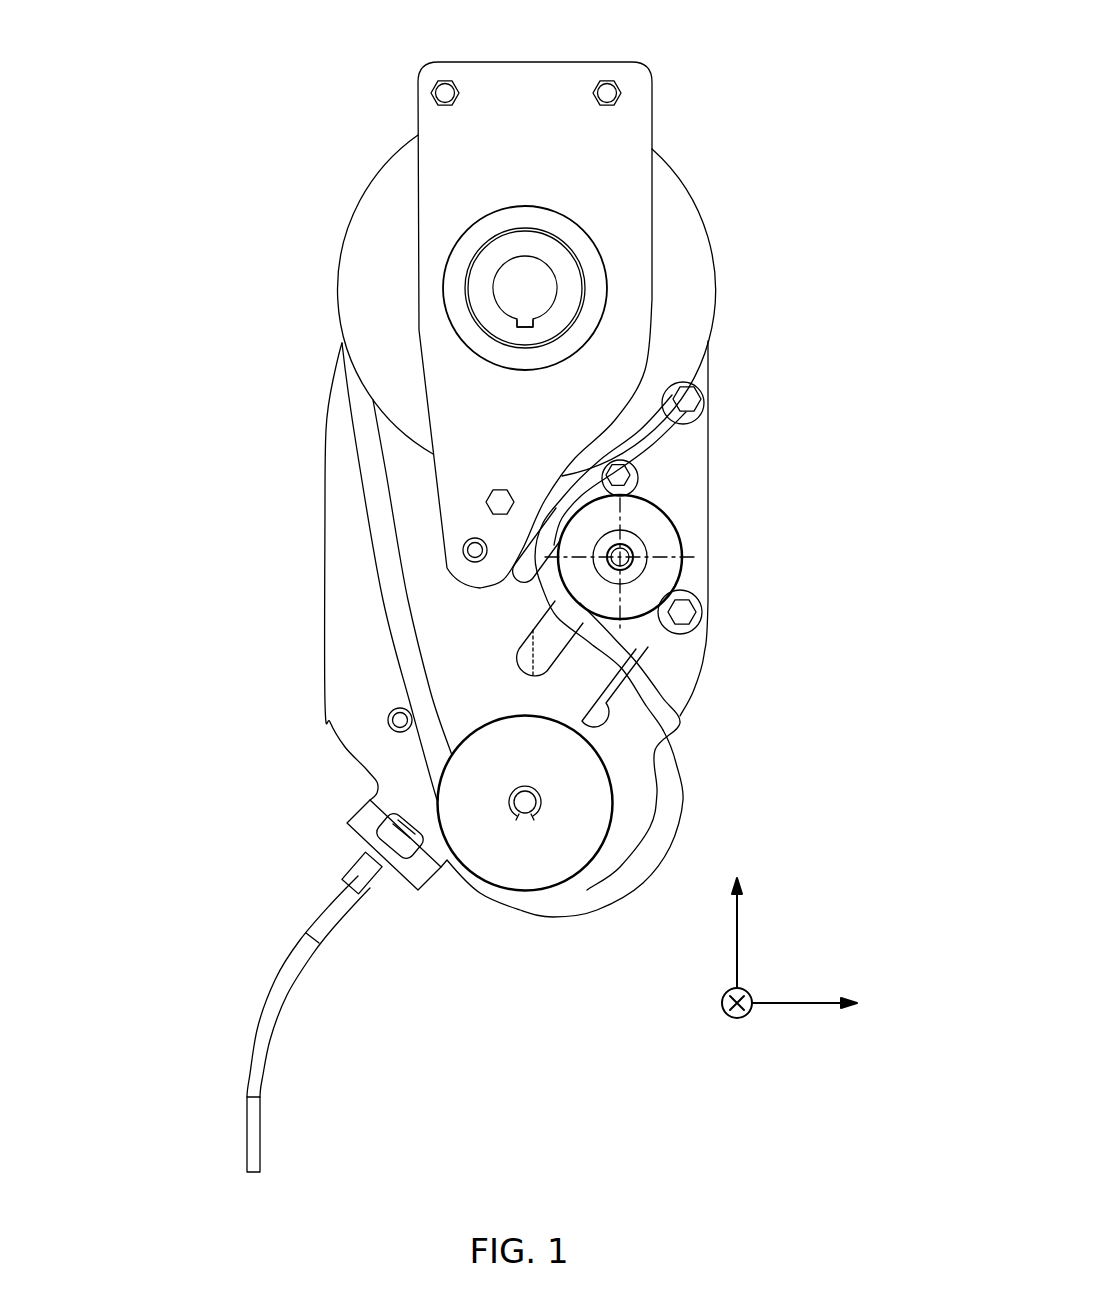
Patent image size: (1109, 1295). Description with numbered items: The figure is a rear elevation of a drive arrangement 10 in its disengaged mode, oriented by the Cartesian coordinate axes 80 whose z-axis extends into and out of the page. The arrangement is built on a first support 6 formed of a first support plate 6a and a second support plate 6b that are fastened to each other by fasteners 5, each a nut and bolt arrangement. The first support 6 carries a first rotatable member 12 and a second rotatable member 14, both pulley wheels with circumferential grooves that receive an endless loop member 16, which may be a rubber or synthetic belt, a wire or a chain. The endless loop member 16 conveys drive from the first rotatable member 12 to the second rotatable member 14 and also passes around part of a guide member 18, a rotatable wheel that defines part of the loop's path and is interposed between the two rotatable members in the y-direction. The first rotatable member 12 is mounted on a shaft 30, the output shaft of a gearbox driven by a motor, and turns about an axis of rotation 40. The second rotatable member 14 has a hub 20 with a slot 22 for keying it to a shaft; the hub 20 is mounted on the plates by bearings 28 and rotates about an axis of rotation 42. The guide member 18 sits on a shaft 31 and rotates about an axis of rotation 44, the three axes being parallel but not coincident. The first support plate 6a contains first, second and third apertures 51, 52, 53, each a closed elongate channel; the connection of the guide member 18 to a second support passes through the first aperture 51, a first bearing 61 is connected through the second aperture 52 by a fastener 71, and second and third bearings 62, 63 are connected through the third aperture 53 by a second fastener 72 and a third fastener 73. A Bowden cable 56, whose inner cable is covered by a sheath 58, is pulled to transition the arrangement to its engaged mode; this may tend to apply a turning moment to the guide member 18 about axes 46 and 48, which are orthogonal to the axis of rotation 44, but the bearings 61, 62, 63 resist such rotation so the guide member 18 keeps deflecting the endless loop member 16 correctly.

The fasteners 5 is at (447, 78).
The first support 6 is at (337, 543).
The first support plate 6a is at (337, 468).
The second support plate 6b is at (638, 102).
The drive arrangement 10 is at (630, 1022).
The first rotatable member 12 is at (487, 867).
The second rotatable member 14 is at (673, 210).
The endless loop member 16 is at (670, 783).
The guide member 18 is at (663, 543).
The hub 20 is at (540, 245).
The slot 22 is at (523, 327).
The bearings 28 is at (488, 232).
The shaft 30 is at (513, 807).
The shaft 31 is at (607, 570).
The axis of rotation 40 is at (525, 802).
The axis of rotation 42 is at (525, 290).
The axis of rotation 44 is at (640, 543).
The axis 46 is at (622, 522).
The axis 48 is at (693, 555).
The first aperture 51 is at (547, 650).
The second aperture 52 is at (655, 650).
The third aperture 53 is at (655, 440).
The Bowden cable 56 is at (257, 1133).
The sheath 58 is at (273, 1010).
The first bearing 61 is at (697, 623).
The second bearing 62 is at (632, 475).
The third bearing 63 is at (700, 390).
The fastener 71 is at (683, 612).
The second fastener 72 is at (633, 485).
The third fastener 73 is at (695, 408).
The Cartesian coordinate axes 80 is at (777, 1043).